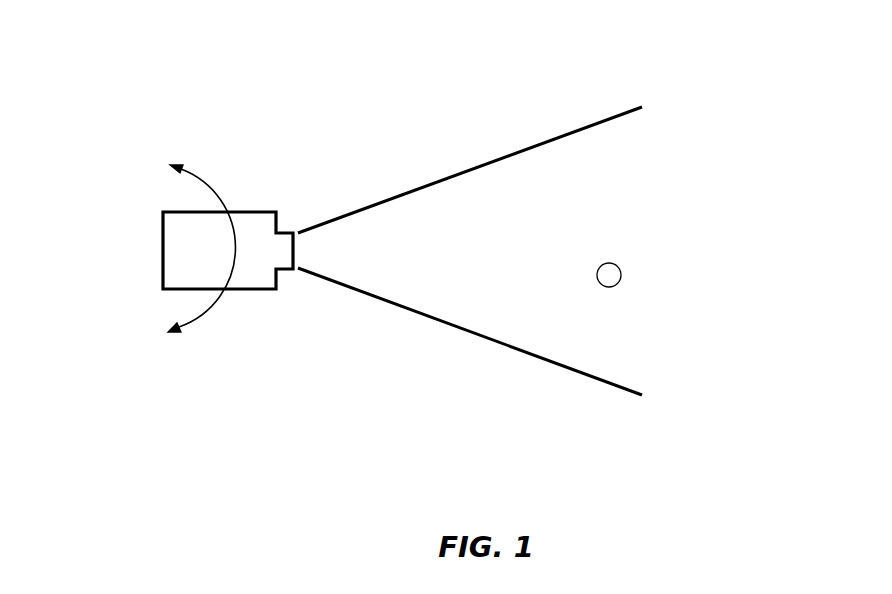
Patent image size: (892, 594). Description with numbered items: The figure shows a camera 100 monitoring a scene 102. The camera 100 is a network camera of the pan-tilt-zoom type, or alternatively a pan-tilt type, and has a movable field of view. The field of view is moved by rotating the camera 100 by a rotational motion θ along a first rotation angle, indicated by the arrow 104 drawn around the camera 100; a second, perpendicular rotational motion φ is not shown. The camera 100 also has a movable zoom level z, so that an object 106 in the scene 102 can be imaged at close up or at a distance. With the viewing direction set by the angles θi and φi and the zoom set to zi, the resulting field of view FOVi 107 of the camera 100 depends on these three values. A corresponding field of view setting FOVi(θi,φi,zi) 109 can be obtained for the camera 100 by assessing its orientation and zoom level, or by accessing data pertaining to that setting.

The camera 100 is at (182, 235).
The scene 102 is at (522, 180).
The arrow 104 is at (220, 188).
The object 106 is at (614, 280).
The field of view FOVi 107 is at (637, 178).
The field of view setting FOVi(θi,φi,zi) 109 is at (227, 382).